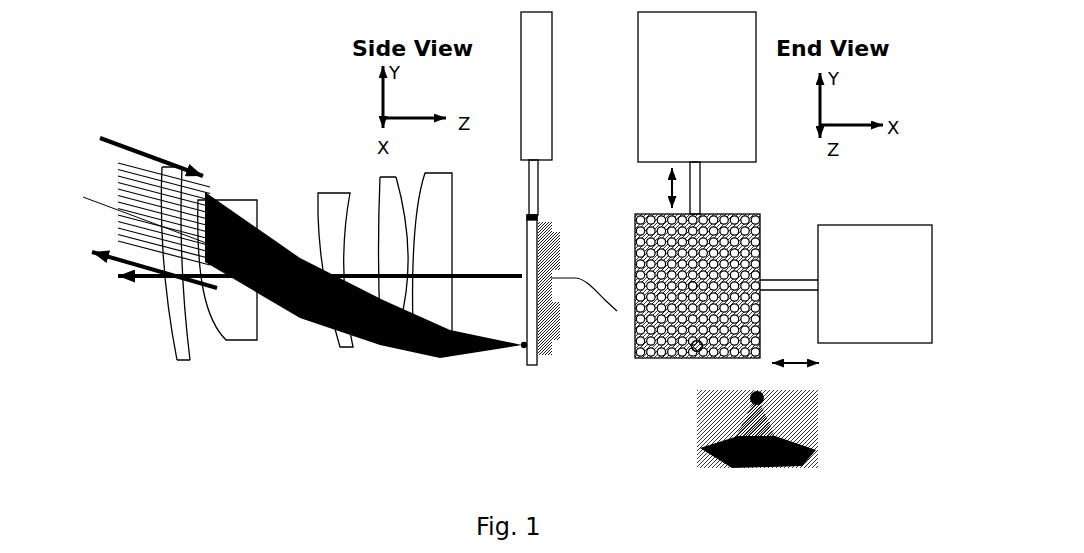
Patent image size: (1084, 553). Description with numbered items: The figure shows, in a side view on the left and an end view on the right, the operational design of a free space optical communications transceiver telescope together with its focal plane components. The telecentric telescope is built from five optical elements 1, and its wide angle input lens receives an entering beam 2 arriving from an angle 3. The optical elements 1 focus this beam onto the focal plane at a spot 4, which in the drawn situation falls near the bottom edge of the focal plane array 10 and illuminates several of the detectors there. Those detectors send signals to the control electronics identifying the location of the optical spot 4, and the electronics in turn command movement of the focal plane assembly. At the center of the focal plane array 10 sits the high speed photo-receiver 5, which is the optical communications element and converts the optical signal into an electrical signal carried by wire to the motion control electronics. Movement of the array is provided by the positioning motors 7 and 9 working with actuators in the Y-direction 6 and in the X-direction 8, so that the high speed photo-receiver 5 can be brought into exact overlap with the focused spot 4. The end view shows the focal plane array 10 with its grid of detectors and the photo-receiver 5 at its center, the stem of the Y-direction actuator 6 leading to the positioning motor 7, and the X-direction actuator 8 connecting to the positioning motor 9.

The optical elements 1 is at (392, 304).
The entering beam 2 is at (146, 190).
The angle 3 is at (198, 225).
The spot 4 is at (525, 354).
The high speed photo-receiver 5 is at (690, 294).
The Y-direction actuator 6 is at (542, 186).
The positioning motor 7 is at (637, 90).
The X-direction actuator 8 is at (802, 278).
The positioning motor 9 is at (884, 344).
The focal plane array 10 is at (535, 364).